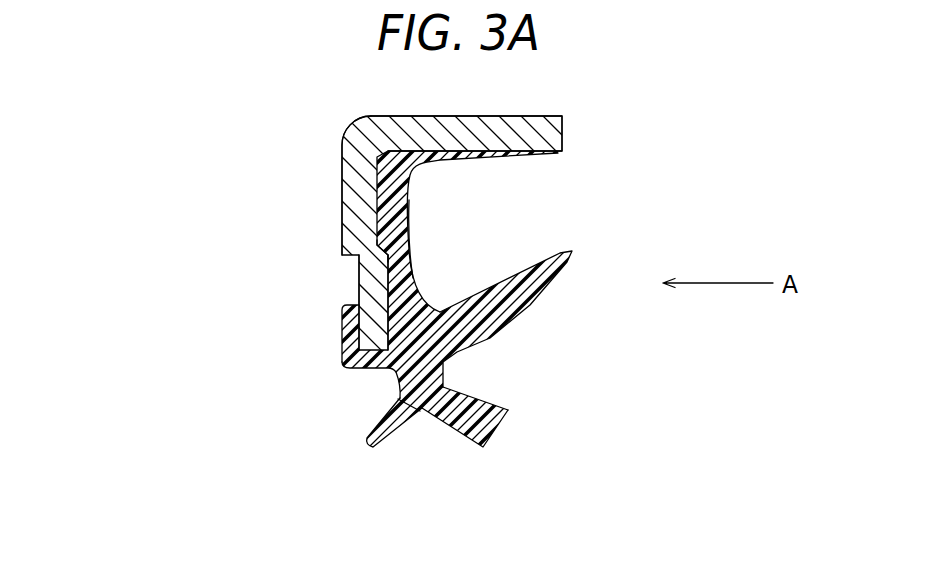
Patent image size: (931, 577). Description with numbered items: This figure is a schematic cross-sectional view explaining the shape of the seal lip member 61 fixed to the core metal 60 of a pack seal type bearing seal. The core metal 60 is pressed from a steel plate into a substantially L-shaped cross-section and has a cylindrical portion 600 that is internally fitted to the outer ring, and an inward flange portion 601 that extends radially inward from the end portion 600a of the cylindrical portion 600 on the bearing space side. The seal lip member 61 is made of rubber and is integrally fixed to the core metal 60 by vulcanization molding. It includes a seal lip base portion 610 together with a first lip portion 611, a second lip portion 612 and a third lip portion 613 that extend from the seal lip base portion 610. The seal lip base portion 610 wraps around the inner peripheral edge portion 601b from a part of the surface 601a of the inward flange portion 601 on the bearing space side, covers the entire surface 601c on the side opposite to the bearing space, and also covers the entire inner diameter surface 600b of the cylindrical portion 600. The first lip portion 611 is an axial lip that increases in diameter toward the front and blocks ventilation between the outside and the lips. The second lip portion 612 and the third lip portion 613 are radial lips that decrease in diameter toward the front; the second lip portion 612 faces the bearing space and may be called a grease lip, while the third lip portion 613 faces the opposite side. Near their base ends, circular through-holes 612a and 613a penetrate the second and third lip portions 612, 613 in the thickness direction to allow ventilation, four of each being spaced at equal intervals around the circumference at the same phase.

The core metal 60 is at (188, 142).
The cylindrical portion 600 is at (430, 121).
The end portion of the cylindrical portion 600a is at (362, 145).
The inner diameter surface of the cylindrical portion 600b is at (489, 155).
The inward flange portion 601 is at (380, 219).
The surface of the inward flange portion on the bearing space side 601a is at (352, 325).
The inner peripheral edge portion 601b is at (395, 374).
The surface of the inward flange portion on the side opposite to the bearing space 601c is at (386, 238).
The seal lip base portion 610 is at (390, 281).
The first lip portion 611 is at (562, 254).
The second lip portion 612 is at (370, 444).
The through-hole 612a is at (394, 400).
The third lip portion 613 is at (508, 412).
The through-hole 613a is at (455, 390).
The seal lip member 61 is at (429, 236).